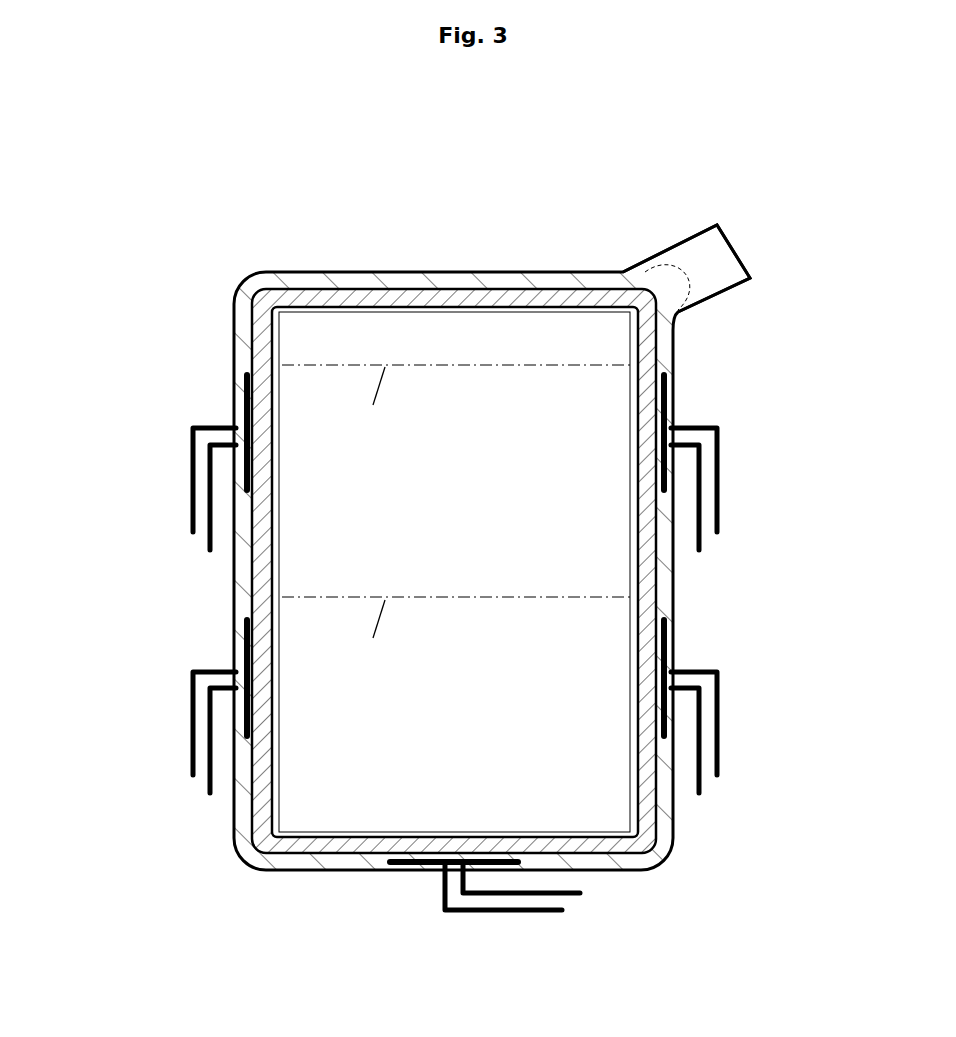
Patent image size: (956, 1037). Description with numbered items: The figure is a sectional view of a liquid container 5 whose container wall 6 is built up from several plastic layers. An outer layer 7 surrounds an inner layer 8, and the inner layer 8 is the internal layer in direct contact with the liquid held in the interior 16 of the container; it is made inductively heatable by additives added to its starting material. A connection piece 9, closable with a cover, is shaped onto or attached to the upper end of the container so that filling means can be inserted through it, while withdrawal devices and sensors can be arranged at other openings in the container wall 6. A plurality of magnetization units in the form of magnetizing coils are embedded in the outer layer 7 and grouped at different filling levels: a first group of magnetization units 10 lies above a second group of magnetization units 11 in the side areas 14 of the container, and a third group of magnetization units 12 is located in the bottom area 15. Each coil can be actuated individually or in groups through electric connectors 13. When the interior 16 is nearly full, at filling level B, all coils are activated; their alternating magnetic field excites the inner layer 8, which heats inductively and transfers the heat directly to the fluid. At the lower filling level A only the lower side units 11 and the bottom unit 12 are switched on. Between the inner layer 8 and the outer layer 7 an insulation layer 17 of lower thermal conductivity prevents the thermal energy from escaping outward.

The liquid container 5 is at (150, 237).
The container wall 6 is at (484, 271).
The outer layer 7 is at (305, 280).
The inner layer 8 is at (385, 297).
The connection piece 9 is at (708, 247).
The first group of magnetization units 10 is at (243, 405).
The second group of magnetization units 11 is at (243, 652).
The third group of magnetization units 12 is at (425, 872).
The electric connectors 13 is at (193, 522).
The side areas 14 is at (212, 573).
The bottom area 15 is at (619, 897).
The interior 16 is at (475, 527).
The insulation layer 17 is at (653, 817).